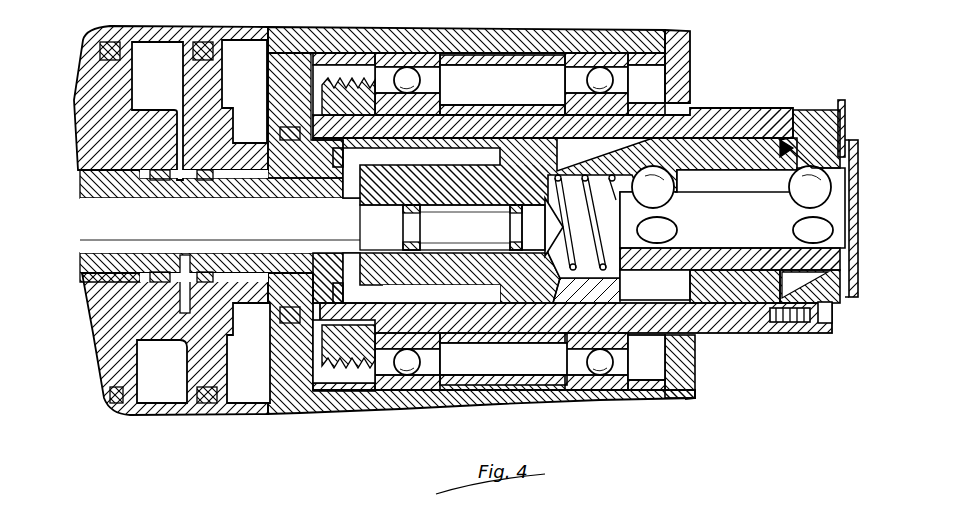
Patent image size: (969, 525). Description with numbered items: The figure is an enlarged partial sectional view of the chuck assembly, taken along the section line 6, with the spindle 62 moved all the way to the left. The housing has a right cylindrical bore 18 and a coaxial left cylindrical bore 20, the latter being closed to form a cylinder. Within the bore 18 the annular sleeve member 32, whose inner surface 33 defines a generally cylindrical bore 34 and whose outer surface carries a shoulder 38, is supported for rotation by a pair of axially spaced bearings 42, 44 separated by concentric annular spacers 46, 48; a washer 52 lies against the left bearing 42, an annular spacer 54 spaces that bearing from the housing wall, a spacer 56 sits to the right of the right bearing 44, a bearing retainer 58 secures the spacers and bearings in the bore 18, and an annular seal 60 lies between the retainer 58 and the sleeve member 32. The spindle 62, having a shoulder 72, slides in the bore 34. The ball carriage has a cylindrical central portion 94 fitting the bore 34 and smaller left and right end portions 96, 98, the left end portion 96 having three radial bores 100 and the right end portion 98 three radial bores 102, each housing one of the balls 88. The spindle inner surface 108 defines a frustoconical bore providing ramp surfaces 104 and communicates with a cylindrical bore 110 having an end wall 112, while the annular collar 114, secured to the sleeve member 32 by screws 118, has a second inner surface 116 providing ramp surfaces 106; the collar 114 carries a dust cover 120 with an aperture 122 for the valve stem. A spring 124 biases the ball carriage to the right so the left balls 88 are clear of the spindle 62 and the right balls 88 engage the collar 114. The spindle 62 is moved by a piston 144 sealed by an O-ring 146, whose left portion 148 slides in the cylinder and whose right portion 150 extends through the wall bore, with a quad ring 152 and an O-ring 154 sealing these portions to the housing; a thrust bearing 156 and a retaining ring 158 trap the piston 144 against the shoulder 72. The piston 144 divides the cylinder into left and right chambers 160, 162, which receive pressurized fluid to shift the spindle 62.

The section line 6- 6 is at (801, 78).
The cylindrical bore 18 is at (530, 72).
The cylindrical bore 20 is at (100, 307).
The sleeve member 32 is at (712, 112).
The inner surface 33 is at (549, 301).
The bore 34 is at (760, 132).
The shoulder 38 is at (662, 34).
The bearing 42 is at (425, 62).
The bearing 44 is at (594, 54).
The annular spacer 46 is at (487, 390).
The annular spacer 48 is at (488, 333).
The washer 52 is at (370, 70).
The annular spacer 54 is at (333, 54).
The spacer 56 is at (652, 386).
The bearing retainer 58 is at (689, 402).
The annular seal 60 is at (680, 357).
The spindle 62 is at (90, 190).
The shoulder 72 is at (314, 225).
The balls 88 is at (676, 188).
The central portion 94 is at (735, 320).
The left end portion 96 is at (648, 263).
The right end portion 98 is at (808, 262).
The radially extending bores 100 is at (673, 203).
The radially extending bores 102 is at (791, 201).
The ramp surfaces 104 is at (652, 152).
The ramp surfaces 106 is at (778, 147).
The inner surface 108 is at (636, 287).
The cylindrical bore 110 is at (573, 173).
The end wall 112 is at (557, 262).
The annular collar 114 is at (814, 110).
The second inner surface 116 is at (790, 282).
The screws 118 is at (822, 330).
The dust cover 120 is at (847, 148).
The aperture 122 is at (858, 210).
The spring 124 is at (454, 185).
The piston 144 is at (199, 68).
The O-ring 146 is at (207, 181).
The left portion 148 is at (192, 378).
The right portion 150 is at (264, 290).
The quad ring 152 is at (206, 403).
The O-ring 154 is at (295, 142).
The thrust bearing 156 is at (363, 155).
The retaining ring 158 is at (183, 175).
The left chamber 160 is at (160, 77).
The right chamber 162 is at (251, 55).